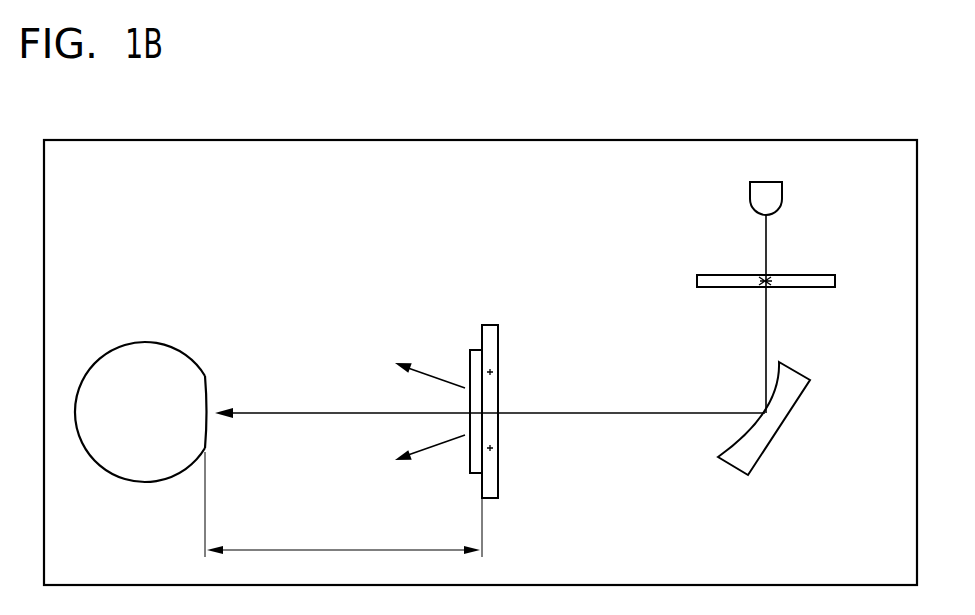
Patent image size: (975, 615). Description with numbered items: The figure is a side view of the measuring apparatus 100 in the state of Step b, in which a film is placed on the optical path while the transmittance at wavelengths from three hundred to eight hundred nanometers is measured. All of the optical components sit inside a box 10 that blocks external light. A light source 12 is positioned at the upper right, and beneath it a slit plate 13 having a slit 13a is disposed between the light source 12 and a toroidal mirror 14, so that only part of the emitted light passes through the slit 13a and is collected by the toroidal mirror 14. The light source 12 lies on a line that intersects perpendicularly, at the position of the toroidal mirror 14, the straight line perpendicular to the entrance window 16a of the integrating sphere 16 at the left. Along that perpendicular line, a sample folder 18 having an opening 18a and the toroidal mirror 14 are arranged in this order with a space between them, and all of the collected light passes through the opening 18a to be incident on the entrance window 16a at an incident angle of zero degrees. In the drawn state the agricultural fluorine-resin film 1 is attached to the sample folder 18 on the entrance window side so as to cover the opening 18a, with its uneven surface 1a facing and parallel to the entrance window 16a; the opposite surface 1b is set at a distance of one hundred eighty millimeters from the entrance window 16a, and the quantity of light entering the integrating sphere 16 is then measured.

The measuring apparatus 100 is at (618, 98).
The box 10 is at (838, 139).
The light source 12 is at (783, 195).
The slit plate 13 is at (758, 281).
The slit 13a is at (760, 288).
The toroidal mirror 14 is at (790, 363).
The integrating sphere 16 is at (177, 380).
The entrance window 16a is at (207, 390).
The agricultural fluorine-resin film 1 is at (487, 409).
The uneven surface 1a is at (470, 462).
The second surface of optical element 1b is at (484, 427).
The sample folder 18 is at (530, 402).
The opening 18a is at (490, 383).